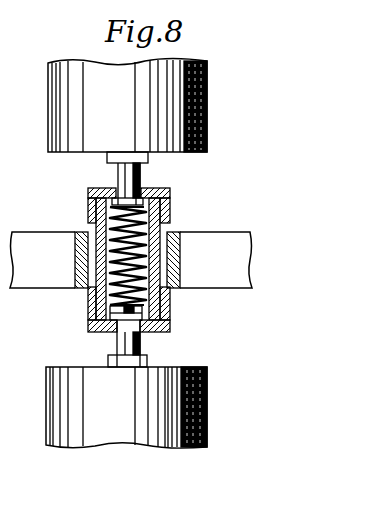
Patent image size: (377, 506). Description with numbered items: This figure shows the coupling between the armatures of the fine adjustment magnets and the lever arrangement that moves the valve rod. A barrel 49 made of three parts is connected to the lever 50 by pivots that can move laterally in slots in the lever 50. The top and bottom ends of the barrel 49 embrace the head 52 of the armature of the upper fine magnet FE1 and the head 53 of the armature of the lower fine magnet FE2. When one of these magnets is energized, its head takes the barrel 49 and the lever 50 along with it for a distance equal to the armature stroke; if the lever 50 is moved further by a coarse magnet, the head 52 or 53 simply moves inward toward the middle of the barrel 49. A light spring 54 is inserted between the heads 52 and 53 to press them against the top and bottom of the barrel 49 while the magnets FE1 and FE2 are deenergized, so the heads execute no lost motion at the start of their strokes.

The fine magnet FE1 is at (215, 111).
The fine magnet FE2 is at (207, 417).
The barrel 49 is at (170, 208).
The lever 50 is at (131, 260).
The head of the armature of FE1 52 is at (143, 189).
The head of the armature of FE2 53 is at (141, 335).
The light spring 54 is at (90, 289).